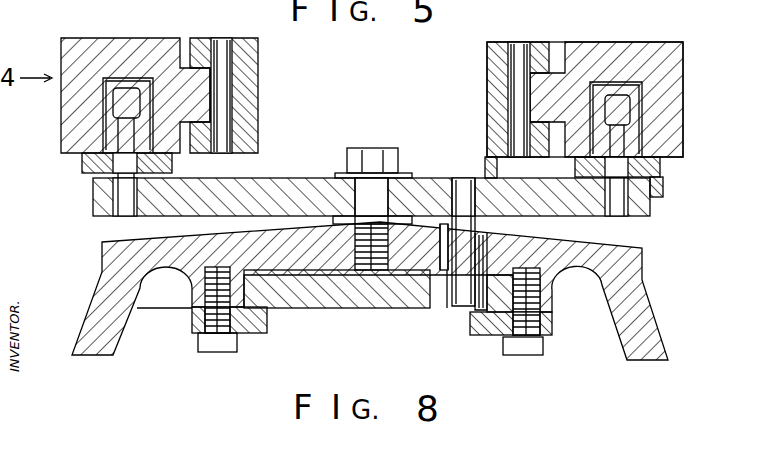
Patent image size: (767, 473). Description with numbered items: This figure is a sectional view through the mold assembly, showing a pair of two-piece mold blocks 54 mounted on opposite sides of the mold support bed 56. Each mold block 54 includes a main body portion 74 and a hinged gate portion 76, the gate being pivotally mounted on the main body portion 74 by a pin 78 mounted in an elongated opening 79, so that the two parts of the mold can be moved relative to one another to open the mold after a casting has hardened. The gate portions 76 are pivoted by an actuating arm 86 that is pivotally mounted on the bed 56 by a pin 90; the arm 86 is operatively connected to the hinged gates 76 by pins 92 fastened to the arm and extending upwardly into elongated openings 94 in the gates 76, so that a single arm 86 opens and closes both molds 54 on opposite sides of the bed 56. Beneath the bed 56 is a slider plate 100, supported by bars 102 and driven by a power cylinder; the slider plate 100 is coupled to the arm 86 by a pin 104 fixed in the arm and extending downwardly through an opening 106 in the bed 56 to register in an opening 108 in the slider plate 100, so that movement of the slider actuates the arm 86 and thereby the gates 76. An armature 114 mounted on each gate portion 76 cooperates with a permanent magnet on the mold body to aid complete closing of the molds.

The mold block 54 is at (710, 74).
The mold support bed 56 is at (118, 283).
The main body portion 74 is at (252, 138).
The hinged gate portion 76 is at (90, 43).
The pin 78 is at (225, 57).
The elongated opening 79 is at (222, 52).
The actuating arm 86 is at (290, 196).
The pin 90 is at (372, 160).
The pin 92 is at (128, 98).
The elongated opening 94 is at (108, 118).
The slider plate 100 is at (352, 308).
The bar 102 is at (196, 325).
The pin 104 is at (457, 190).
The opening 106 is at (478, 306).
The opening 108 is at (445, 300).
The armature 114 is at (88, 160).